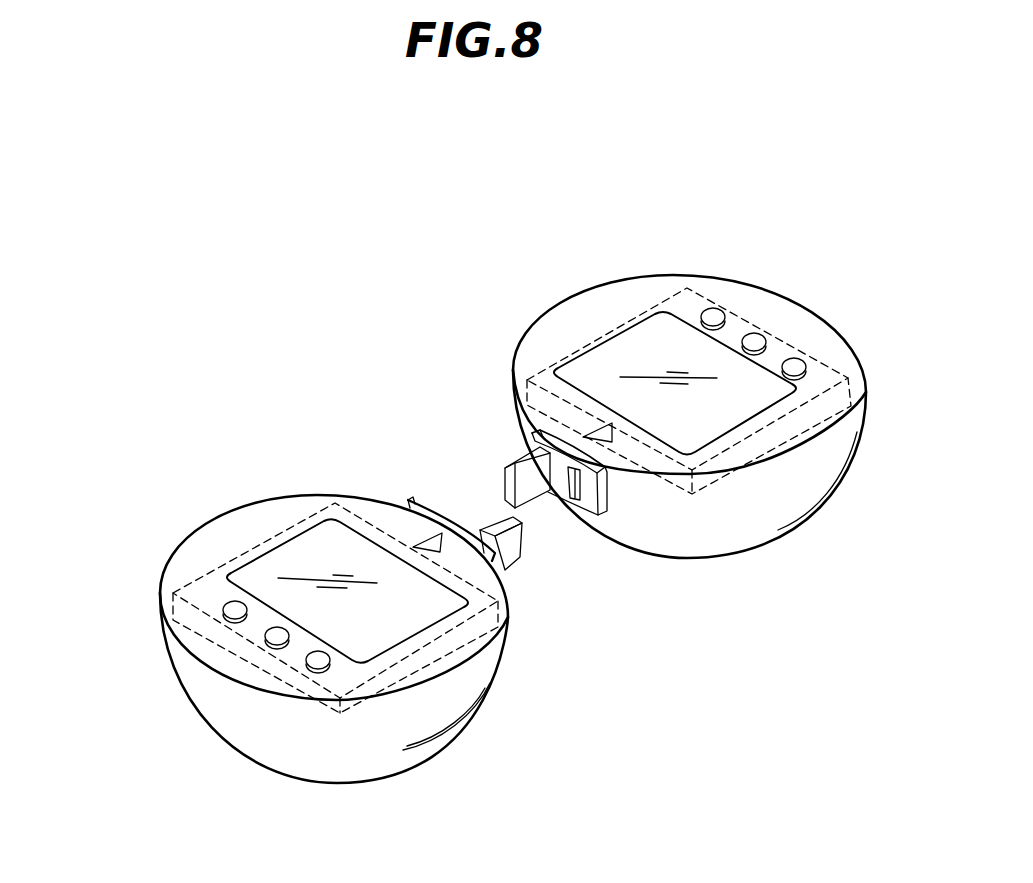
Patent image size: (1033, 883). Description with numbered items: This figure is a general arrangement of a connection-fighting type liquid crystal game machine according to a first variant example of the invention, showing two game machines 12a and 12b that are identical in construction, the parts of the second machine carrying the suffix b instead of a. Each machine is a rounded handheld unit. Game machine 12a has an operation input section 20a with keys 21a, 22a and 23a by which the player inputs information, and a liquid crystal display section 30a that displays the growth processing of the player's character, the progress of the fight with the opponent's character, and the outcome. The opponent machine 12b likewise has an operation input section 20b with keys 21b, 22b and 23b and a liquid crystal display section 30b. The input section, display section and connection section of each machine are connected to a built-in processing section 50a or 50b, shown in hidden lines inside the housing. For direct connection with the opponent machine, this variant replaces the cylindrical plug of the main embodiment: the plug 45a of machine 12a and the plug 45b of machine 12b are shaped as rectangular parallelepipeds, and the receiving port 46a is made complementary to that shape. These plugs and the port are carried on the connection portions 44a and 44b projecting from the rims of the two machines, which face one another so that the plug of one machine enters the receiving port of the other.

The game machine 12a is at (287, 490).
The game machine 12b is at (557, 297).
The operation input section 20a is at (214, 704).
The operation input section 20b is at (744, 280).
The key 21a is at (224, 614).
The key 21b is at (798, 313).
The key 22a is at (266, 643).
The key 22b is at (755, 333).
The key 23a is at (311, 669).
The key 23b is at (711, 308).
The liquid crystal display section 30a is at (268, 567).
The liquid crystal display section 30b is at (640, 335).
The connector mount of first device 44a is at (417, 492).
The connector mount of second device 44b is at (593, 537).
The plug 45a is at (508, 563).
The plug 45b is at (510, 447).
The receiving port 46a is at (580, 488).
The processing section 50a is at (383, 688).
The processing section 50b is at (733, 465).